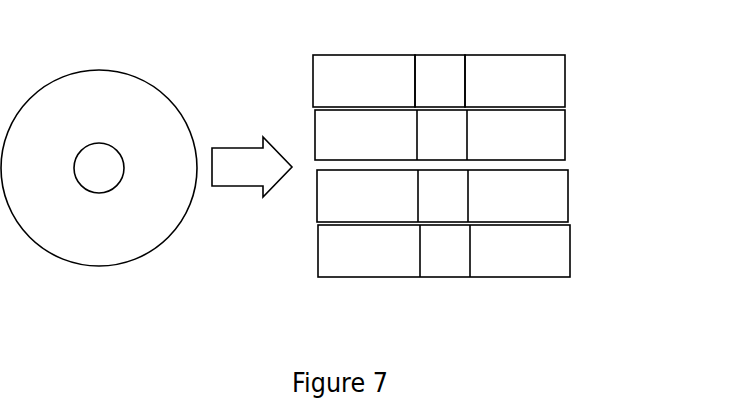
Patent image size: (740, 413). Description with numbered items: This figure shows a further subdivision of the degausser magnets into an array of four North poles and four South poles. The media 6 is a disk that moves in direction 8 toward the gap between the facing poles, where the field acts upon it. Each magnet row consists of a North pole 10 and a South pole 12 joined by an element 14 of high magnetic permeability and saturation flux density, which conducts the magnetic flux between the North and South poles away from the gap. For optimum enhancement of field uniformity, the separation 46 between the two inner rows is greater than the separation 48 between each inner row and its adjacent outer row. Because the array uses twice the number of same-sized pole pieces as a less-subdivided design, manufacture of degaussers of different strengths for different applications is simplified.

The media 6 is at (107, 70).
The direction 8 is at (277, 183).
The North pole 10 is at (362, 62).
The South pole 12 is at (513, 60).
The element of high magnetic permeability 14 is at (453, 63).
The separation between the two inner elements 46 is at (560, 163).
The separation between inner element and adjacent outer element 48 is at (562, 105).